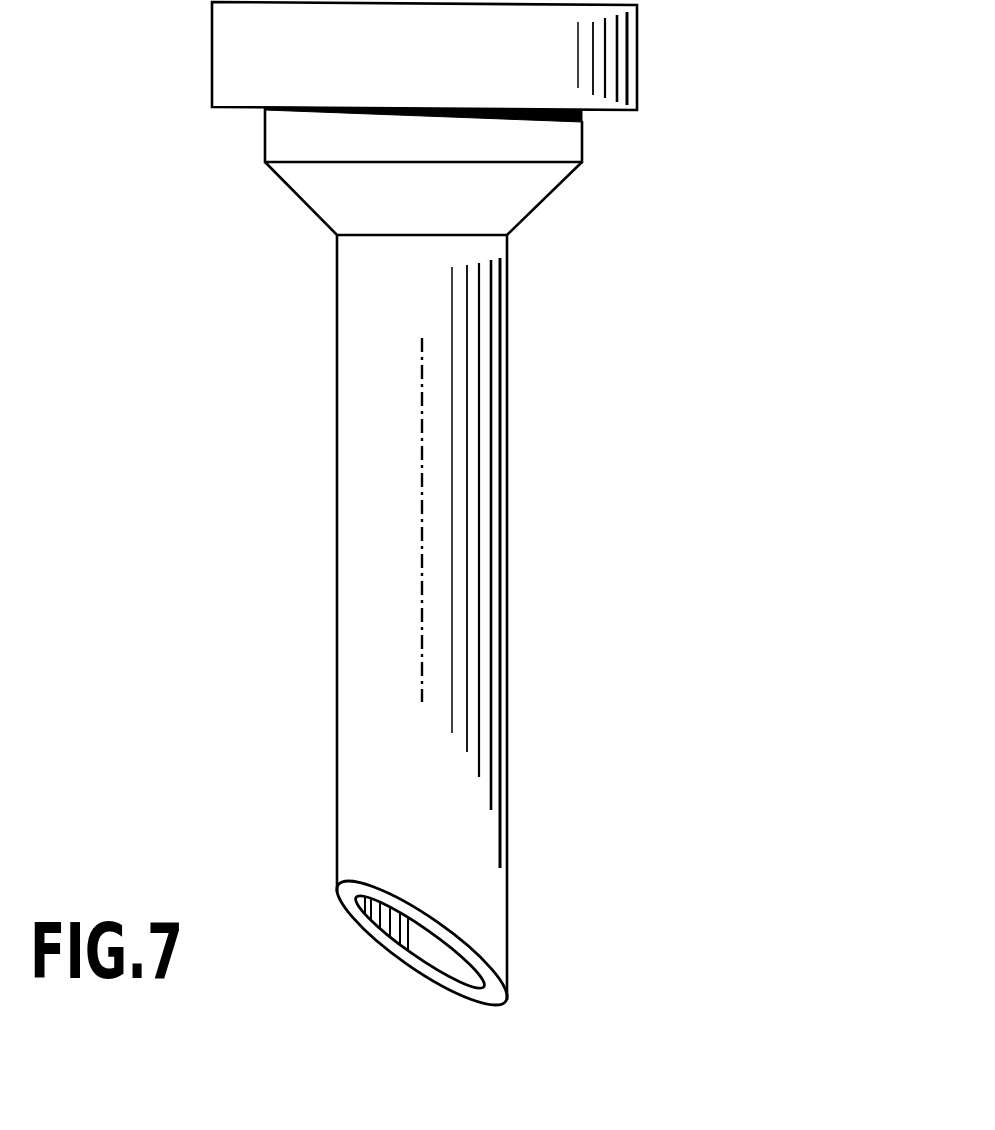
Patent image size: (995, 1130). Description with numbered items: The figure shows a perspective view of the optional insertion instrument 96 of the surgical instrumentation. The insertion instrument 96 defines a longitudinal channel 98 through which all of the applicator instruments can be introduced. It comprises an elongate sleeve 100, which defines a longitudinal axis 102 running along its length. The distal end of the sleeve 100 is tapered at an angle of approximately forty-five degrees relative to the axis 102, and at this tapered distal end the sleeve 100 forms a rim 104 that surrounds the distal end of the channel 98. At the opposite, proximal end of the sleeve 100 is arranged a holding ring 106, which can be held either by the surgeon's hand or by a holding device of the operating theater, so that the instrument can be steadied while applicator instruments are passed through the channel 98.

The insertion instrument 96 is at (564, 564).
The longitudinal channel 98 is at (448, 960).
The elongate sleeve 100 is at (385, 827).
The longitudinal axis 102 is at (420, 519).
The rim 104 is at (492, 992).
The holding ring 106 is at (255, 73).